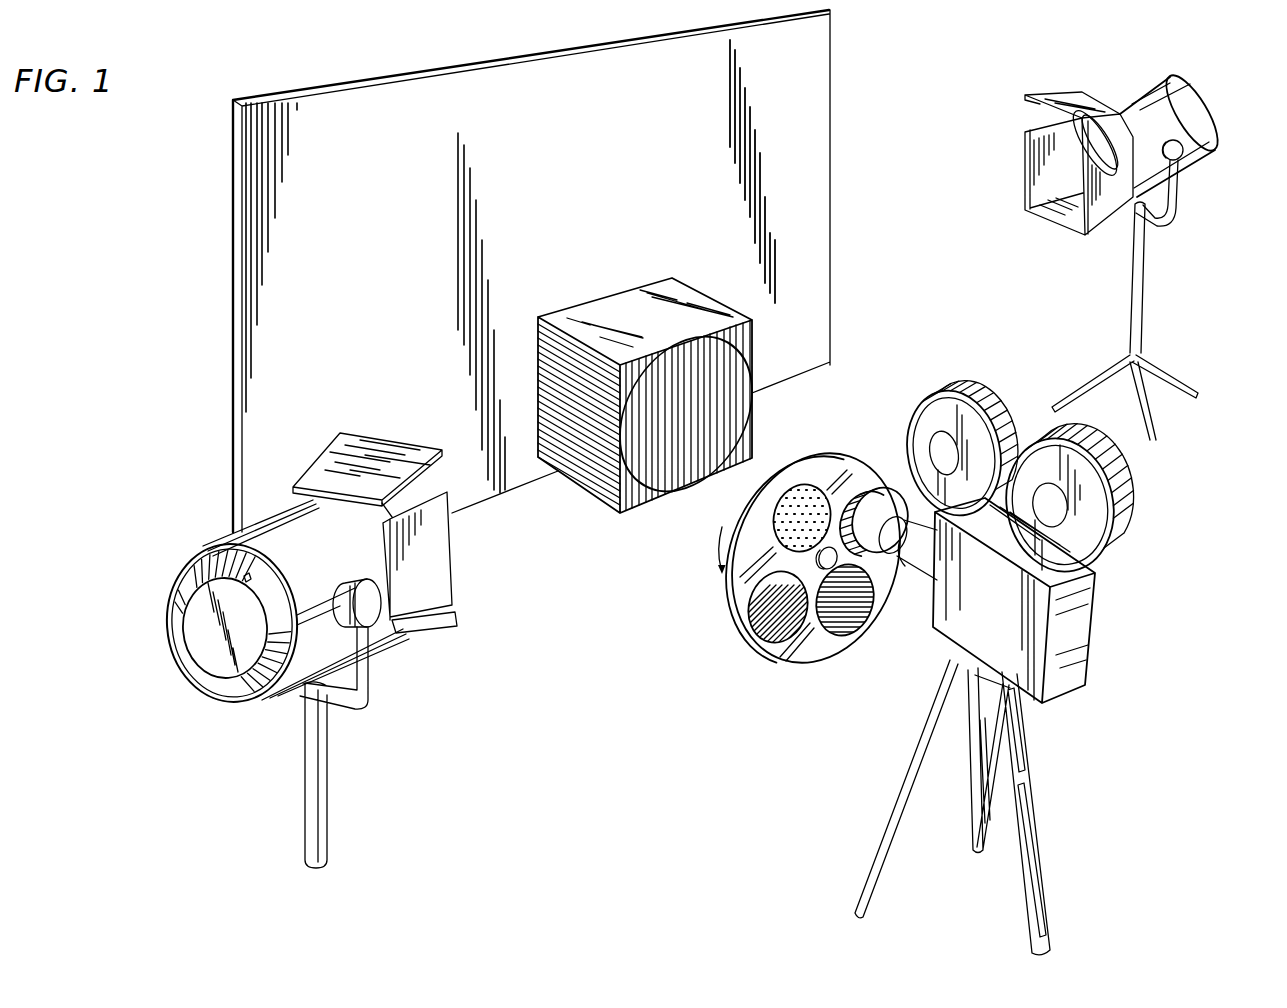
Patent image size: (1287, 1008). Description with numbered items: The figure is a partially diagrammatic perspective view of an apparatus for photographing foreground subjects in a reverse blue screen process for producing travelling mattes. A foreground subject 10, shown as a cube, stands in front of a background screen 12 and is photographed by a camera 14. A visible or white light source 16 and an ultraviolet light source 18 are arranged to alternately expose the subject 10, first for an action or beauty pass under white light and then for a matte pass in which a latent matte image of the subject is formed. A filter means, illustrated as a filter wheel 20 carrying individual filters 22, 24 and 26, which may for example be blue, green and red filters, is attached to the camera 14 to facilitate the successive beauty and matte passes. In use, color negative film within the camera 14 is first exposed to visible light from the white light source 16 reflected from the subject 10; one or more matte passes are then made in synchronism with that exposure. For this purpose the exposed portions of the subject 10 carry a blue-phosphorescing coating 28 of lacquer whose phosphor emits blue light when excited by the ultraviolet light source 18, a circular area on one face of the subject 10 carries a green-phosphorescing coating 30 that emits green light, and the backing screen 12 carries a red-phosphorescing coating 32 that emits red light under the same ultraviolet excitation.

The foreground subject 10 is at (638, 281).
The background screen 12 is at (226, 286).
The camera 14 is at (1102, 649).
The white light source 16 is at (1218, 98).
The ultraviolet light source 18 is at (180, 661).
The filter wheel 20 is at (863, 460).
The filter 22 is at (843, 620).
The filter 24 is at (758, 628).
The filter 26 is at (793, 516).
The blue-phosphorescing coating 28 is at (615, 371).
The green-phosphorescing coating 30 is at (745, 412).
The red-phosphorescing coating 32 is at (575, 155).